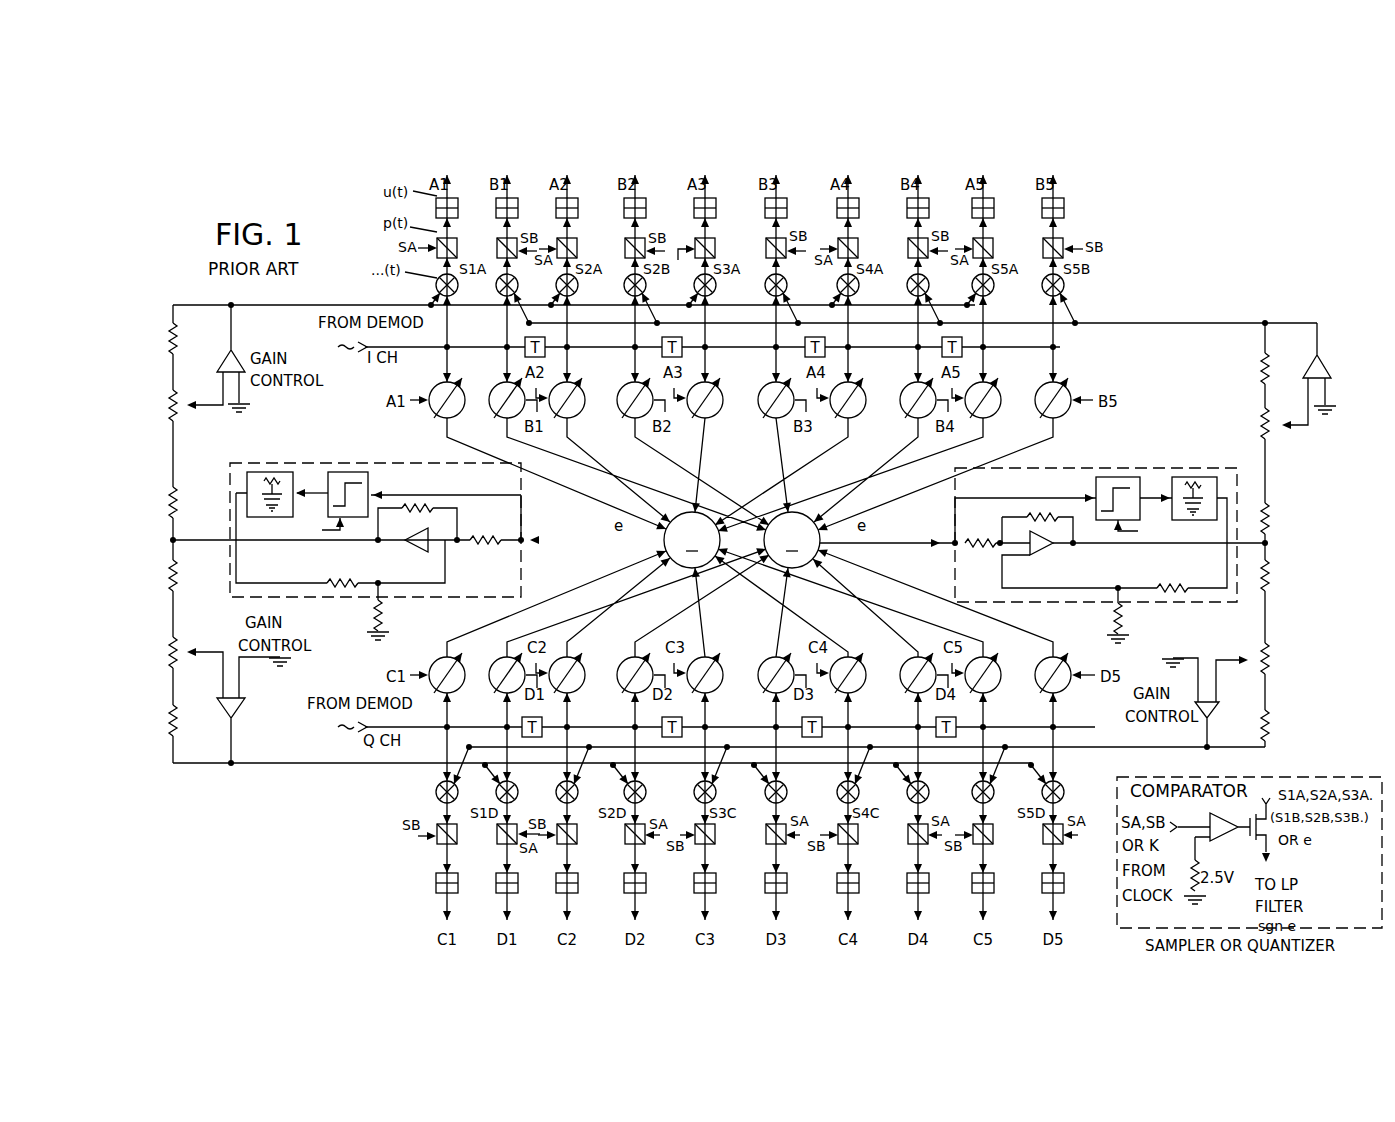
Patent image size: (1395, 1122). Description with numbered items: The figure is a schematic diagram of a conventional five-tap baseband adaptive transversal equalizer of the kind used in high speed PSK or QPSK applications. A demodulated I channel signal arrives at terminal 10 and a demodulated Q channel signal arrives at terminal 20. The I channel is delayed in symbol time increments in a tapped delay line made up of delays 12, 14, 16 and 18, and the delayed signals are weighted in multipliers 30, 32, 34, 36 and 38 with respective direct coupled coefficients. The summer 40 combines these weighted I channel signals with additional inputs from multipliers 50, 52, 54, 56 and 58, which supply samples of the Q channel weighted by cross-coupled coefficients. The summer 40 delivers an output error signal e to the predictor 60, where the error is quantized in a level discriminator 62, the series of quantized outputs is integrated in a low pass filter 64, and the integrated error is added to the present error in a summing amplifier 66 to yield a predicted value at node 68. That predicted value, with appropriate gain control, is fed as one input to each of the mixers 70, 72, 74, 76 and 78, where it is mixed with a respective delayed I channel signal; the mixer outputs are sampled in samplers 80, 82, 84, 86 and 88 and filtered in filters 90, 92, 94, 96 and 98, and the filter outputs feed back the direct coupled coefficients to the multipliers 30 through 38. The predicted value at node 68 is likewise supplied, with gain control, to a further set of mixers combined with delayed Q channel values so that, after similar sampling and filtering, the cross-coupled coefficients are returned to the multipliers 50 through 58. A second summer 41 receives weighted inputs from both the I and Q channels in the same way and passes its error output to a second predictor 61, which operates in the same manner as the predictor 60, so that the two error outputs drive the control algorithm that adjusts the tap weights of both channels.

The terminal 10 is at (689, 348).
The delay 12 is at (528, 340).
The delay 14 is at (678, 340).
The delay 16 is at (822, 340).
The delay 18 is at (946, 340).
The terminal 20 is at (701, 728).
The multiplier 30 is at (435, 389).
The multiplier 32 is at (582, 390).
The multiplier 34 is at (720, 390).
The multiplier 36 is at (863, 390).
The multiplier 38 is at (999, 390).
The summer 40 is at (662, 543).
The second summer 41 is at (822, 543).
The multiplier 50 is at (435, 687).
The multiplier 52 is at (557, 692).
The multiplier 54 is at (695, 690).
The multiplier 56 is at (839, 692).
The multiplier 58 is at (976, 692).
The predictor 60 is at (230, 521).
The second predictor 61 is at (1081, 468).
The level discriminator 62 is at (373, 470).
The low pass filter 64 is at (247, 490).
The summing amplifier 66 is at (420, 549).
The node 68 is at (168, 536).
The mixer 70 is at (437, 289).
The mixer 72 is at (558, 285).
The mixer 74 is at (696, 285).
The mixer 76 is at (839, 285).
The mixer 78 is at (974, 285).
The sampler 80 is at (437, 256).
The sampler 82 is at (579, 254).
The sampler 84 is at (717, 254).
The sampler 86 is at (860, 254).
The sampler 88 is at (993, 246).
The filter 90 is at (436, 206).
The filter 92 is at (556, 208).
The filter 94 is at (694, 208).
The filter 96 is at (837, 208).
The filter 98 is at (972, 208).